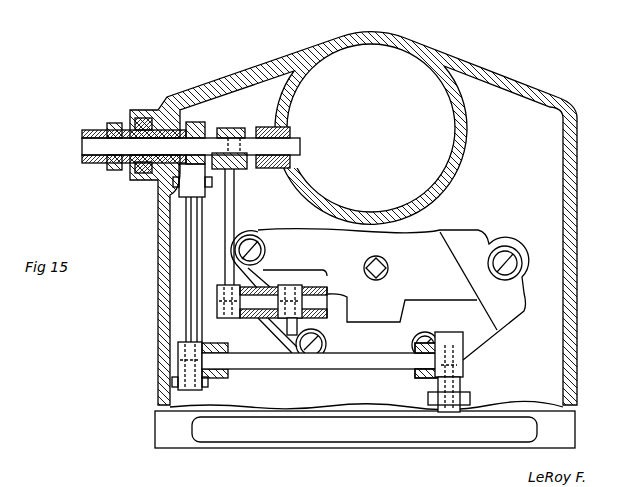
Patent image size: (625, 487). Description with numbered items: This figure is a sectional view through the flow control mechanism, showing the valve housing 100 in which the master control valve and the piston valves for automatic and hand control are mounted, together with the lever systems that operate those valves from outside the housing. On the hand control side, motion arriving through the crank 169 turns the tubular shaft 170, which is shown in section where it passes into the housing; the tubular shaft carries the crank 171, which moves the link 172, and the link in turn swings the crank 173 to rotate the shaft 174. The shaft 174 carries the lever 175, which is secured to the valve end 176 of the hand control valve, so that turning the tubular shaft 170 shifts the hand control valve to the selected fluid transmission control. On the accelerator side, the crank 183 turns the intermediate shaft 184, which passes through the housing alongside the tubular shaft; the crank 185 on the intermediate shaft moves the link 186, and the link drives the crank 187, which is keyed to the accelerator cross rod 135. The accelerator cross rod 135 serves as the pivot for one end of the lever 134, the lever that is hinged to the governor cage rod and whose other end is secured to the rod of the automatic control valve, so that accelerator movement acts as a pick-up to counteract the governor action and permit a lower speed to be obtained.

The valve housing 100 is at (423, 237).
The lever 134 is at (287, 328).
The accelerator cross rod 135 is at (263, 300).
The crank 169 is at (113, 122).
The tubular shaft 170 is at (158, 108).
The crank 171 is at (197, 122).
The link 172 is at (191, 279).
The crank 173 is at (204, 344).
The shaft 174 is at (291, 361).
The lever 175 is at (436, 388).
The valve end 176 is at (462, 384).
The crank 183 is at (90, 130).
The intermediate shaft 184 is at (249, 140).
The crank 185 is at (232, 126).
The link 186 is at (228, 224).
The crank 187 is at (217, 289).